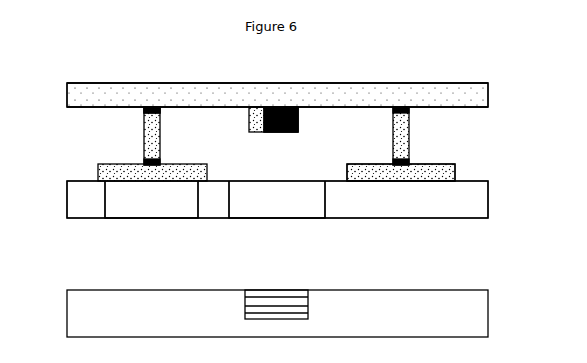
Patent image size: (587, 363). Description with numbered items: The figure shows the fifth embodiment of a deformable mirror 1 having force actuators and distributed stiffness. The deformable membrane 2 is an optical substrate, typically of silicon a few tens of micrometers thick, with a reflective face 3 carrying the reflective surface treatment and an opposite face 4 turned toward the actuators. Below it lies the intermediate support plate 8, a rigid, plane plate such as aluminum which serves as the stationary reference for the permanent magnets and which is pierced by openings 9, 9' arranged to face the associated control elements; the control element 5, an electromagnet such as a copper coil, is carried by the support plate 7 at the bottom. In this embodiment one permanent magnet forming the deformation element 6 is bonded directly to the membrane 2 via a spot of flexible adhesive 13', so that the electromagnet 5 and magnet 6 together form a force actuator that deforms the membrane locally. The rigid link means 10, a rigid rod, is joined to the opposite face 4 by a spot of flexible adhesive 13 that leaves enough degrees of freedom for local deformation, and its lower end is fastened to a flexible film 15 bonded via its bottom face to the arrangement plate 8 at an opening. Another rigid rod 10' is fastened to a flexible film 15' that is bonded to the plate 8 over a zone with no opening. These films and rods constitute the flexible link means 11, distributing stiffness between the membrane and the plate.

The deformable mirror 1 is at (380, 75).
The deformable membrane 2 is at (482, 95).
The reflective face 3 is at (457, 83).
The opposite face 4 is at (457, 107).
The control element 5 is at (278, 310).
The deformation element 6 is at (258, 132).
The support plate 7 is at (481, 322).
The intermediate support plate 8 is at (480, 200).
The opening 9 is at (131, 212).
The second substrate section 9' is at (256, 212).
The rigid link means 10 is at (87, 130).
The rigid rod 10' is at (367, 136).
The flexible link means 11 is at (463, 173).
The spot of flexible adhesive 13 is at (130, 80).
The spot of flexible adhesive 13' is at (260, 95).
The flexible film 15 is at (156, 155).
The flexible film 15' is at (373, 198).